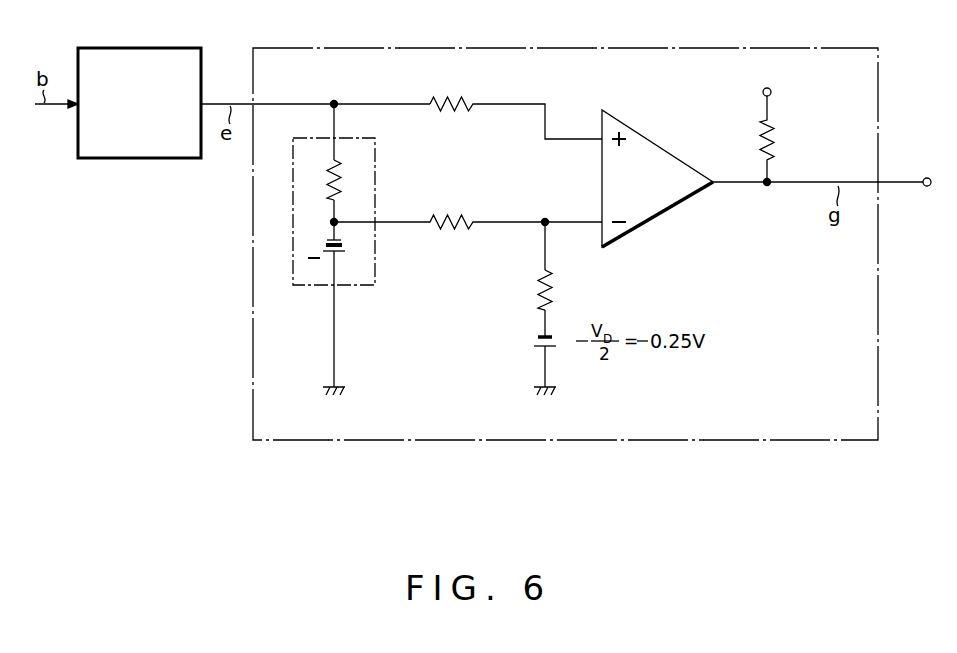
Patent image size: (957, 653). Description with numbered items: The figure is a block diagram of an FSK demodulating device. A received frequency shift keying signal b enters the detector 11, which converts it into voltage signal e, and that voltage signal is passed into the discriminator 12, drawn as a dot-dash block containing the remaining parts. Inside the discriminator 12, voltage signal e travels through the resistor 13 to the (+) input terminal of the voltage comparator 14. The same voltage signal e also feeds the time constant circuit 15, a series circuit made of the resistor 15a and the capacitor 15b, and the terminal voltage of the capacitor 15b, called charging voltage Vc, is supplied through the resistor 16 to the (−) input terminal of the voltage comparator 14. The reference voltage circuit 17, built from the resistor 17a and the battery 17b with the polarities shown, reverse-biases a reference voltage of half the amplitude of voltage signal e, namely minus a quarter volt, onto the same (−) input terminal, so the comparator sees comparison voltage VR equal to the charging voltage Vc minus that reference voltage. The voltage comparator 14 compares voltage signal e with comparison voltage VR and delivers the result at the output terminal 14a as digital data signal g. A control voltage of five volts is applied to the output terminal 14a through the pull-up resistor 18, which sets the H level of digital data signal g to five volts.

The detector 11 is at (180, 48).
The discriminator 12 is at (520, 48).
The resistor 13 is at (470, 104).
The voltage comparator 14 is at (646, 138).
The output terminal 14a is at (926, 178).
The time constant circuit 15 is at (292, 205).
The resistor 15a is at (340, 164).
The capacitor 15b is at (346, 255).
The resistor 16 is at (446, 221).
The reference voltage circuit 17 is at (522, 292).
The resistor 17a is at (552, 280).
The battery 17b is at (532, 343).
The pull-up resistor 18 is at (774, 136).